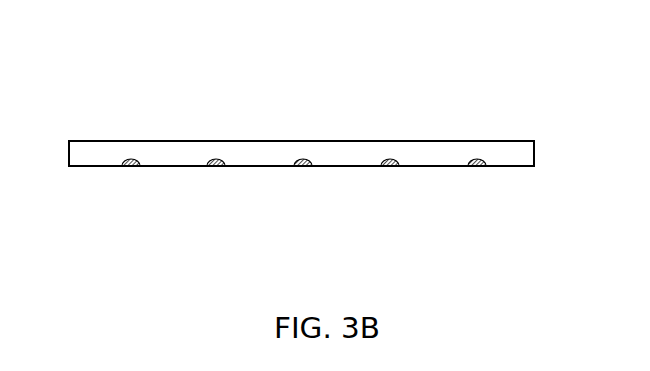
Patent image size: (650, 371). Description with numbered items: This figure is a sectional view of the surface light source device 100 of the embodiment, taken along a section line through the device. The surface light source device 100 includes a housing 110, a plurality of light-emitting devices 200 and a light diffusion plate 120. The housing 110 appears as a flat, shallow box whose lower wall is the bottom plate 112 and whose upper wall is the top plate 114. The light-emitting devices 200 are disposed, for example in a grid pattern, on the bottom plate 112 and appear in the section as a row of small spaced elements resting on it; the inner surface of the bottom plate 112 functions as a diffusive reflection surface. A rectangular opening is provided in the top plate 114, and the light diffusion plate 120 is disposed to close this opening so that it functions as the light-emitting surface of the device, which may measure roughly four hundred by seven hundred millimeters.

The surface light source device 100 is at (528, 88).
The housing 110 is at (276, 154).
The bottom plate 112 is at (180, 167).
The top plate 114 is at (145, 141).
The light diffusion plate 120 is at (203, 141).
The light-emitting devices 200 is at (300, 159).